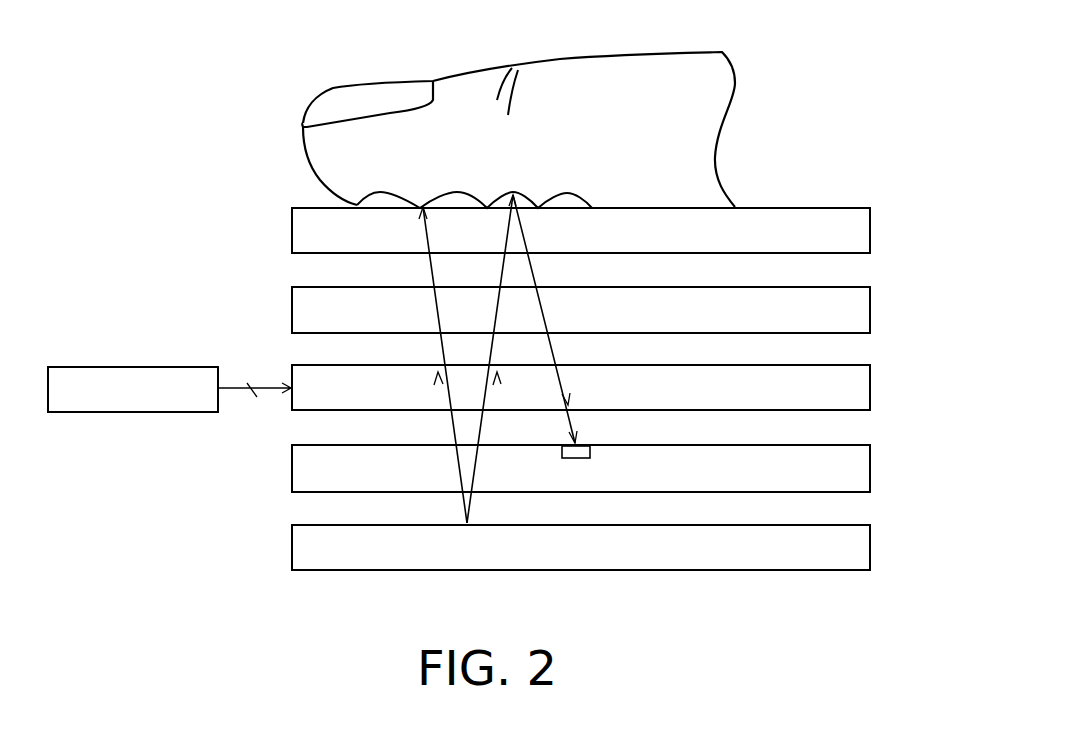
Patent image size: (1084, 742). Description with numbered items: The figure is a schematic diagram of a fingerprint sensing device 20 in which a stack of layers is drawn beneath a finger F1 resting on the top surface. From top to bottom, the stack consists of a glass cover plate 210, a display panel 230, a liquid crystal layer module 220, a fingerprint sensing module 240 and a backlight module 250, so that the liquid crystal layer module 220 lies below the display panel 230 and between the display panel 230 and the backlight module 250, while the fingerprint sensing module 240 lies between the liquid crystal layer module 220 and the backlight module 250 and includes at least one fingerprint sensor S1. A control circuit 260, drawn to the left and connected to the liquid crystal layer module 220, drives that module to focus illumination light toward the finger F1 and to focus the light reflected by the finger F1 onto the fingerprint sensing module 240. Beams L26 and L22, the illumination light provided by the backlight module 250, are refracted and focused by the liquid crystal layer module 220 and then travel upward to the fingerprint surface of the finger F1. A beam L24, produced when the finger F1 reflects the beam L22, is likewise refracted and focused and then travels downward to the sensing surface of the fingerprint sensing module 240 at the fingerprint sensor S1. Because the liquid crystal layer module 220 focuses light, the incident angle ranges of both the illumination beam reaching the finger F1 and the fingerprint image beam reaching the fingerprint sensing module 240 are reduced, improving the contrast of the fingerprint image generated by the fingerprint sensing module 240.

The fingerprint sensing display device 20 is at (501, 414).
The glass cover plate 210 is at (870, 232).
The display panel 230 is at (870, 310).
The liquid crystal layer module 220 is at (870, 388).
The fingerprint sensing module 240 is at (870, 468).
The backlight module 250 is at (870, 547).
The control circuit 260 is at (150, 367).
The finger F1 is at (690, 52).
The fingerprint sensor S1 is at (577, 460).
The beam L22 is at (482, 465).
The beam L24 is at (537, 270).
The beam L26 is at (426, 266).